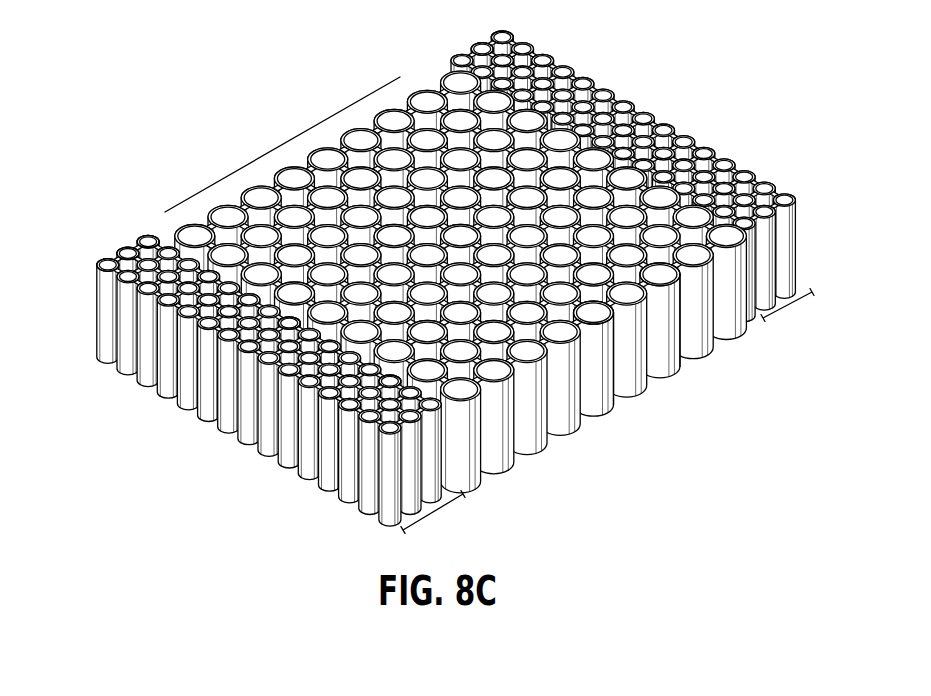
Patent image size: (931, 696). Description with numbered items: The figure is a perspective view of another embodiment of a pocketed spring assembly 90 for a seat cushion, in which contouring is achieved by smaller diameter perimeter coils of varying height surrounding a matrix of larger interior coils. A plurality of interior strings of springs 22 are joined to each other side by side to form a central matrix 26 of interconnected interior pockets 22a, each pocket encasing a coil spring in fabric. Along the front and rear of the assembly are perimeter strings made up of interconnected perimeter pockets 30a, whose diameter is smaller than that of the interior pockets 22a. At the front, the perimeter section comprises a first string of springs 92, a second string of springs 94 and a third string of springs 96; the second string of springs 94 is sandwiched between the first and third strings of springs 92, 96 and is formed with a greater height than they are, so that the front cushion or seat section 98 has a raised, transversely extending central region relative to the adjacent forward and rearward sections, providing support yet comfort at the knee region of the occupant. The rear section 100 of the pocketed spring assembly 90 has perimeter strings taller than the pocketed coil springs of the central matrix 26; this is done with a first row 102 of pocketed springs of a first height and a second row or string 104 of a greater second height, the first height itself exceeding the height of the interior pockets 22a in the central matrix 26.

The pocketed spring assembly 90 is at (633, 72).
The interior strings of springs 22 is at (297, 316).
The interior pockets 22a is at (602, 357).
The perimeter pockets 30a is at (645, 141).
The central matrix 26 is at (299, 140).
The first string of springs 92 is at (148, 234).
The second string of springs 94 is at (116, 246).
The third string of springs 96 is at (96, 263).
The front cushion or seat section 98 is at (434, 515).
The rear section 100 is at (795, 312).
The first row of pocketed springs 102 is at (466, 51).
The second row or string 104 is at (489, 31).